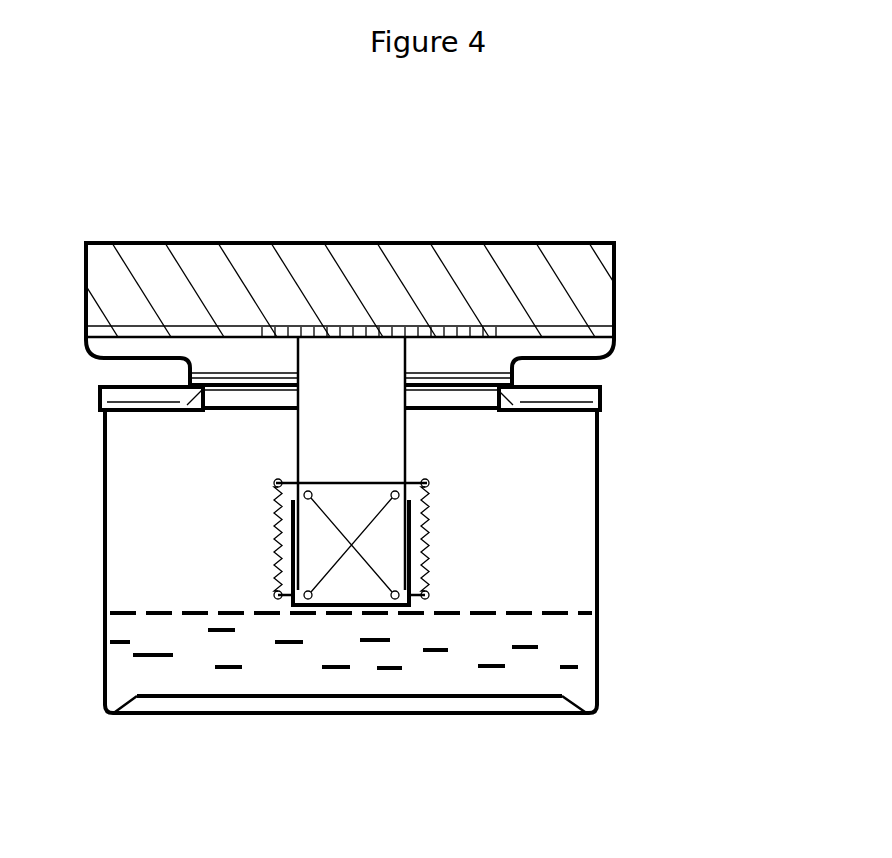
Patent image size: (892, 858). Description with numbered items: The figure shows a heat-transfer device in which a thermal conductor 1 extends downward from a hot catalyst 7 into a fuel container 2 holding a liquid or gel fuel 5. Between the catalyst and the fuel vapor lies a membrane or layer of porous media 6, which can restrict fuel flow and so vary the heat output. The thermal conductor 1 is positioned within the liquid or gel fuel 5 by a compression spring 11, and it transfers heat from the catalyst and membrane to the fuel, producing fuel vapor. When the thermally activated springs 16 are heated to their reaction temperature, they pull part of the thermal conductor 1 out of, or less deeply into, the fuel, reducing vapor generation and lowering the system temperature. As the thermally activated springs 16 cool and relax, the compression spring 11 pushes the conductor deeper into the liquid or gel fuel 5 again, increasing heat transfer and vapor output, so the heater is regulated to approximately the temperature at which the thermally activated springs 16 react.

The hot catalyst 7 is at (455, 222).
The porous media 6 is at (558, 358).
The thermal conductor 1 is at (413, 442).
The fuel container 2 is at (605, 630).
The thermally activated springs 16 is at (435, 525).
The compression spring 11 is at (348, 580).
The liquid or gel fuel 5 is at (287, 650).